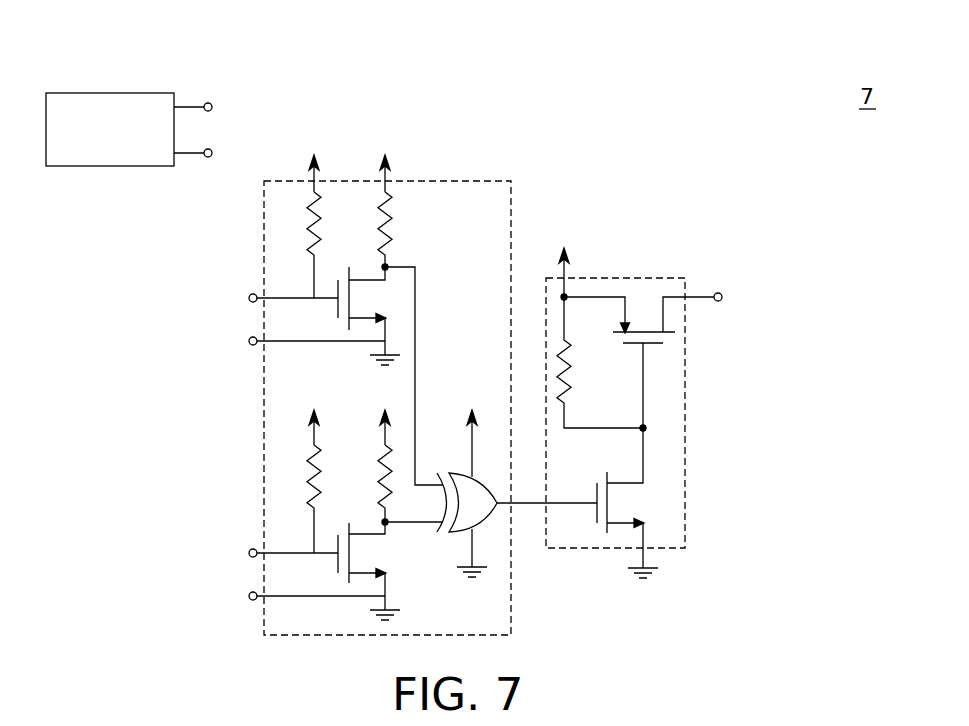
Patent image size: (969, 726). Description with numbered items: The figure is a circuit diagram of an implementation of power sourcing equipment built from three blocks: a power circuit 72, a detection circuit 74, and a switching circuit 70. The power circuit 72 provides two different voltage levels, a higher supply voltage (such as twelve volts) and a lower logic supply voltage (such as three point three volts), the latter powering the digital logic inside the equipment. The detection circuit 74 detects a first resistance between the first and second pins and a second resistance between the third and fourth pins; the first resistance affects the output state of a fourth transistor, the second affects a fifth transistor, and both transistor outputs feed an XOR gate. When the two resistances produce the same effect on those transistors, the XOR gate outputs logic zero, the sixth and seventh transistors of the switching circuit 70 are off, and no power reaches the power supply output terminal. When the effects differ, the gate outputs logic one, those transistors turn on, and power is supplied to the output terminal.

The power circuit 72 is at (110, 93).
The detection circuit 74 is at (455, 181).
The switching circuit 70 is at (630, 278).